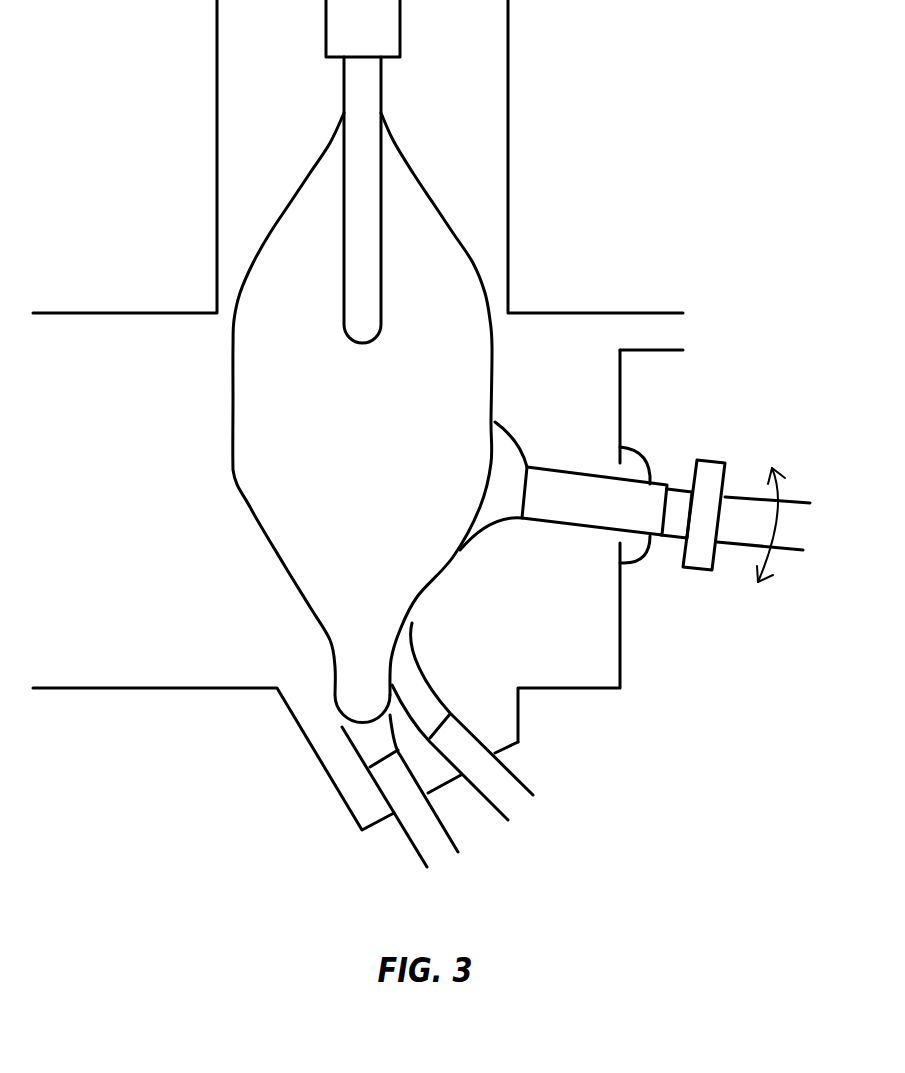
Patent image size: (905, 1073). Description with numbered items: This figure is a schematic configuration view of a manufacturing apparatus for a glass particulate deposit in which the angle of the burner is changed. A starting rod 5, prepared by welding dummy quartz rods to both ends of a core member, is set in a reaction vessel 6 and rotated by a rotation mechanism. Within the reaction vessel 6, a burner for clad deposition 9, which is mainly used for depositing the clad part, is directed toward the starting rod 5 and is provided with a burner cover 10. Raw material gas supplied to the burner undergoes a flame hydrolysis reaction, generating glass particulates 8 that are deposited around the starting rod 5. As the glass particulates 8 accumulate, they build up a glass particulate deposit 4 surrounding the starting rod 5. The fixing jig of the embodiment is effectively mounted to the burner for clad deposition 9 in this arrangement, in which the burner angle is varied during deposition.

The glass particulate deposit 4 is at (455, 333).
The starting rod 5 is at (367, 199).
The reaction vessel 6 is at (548, 378).
The glass particulates 8 is at (498, 497).
The burner for clad deposition 9 is at (678, 512).
The burner cover 10 is at (592, 500).